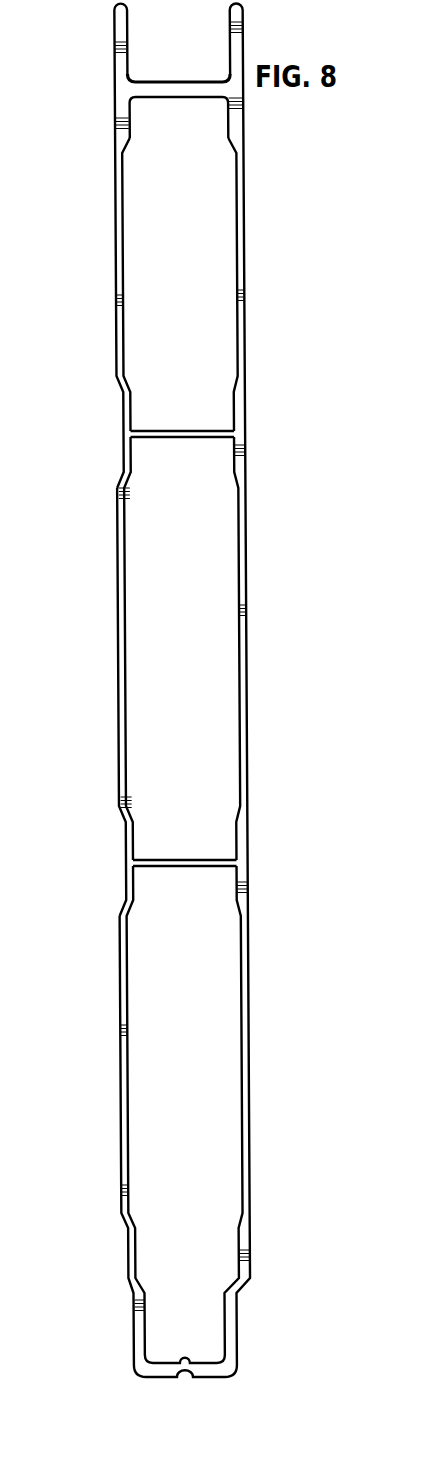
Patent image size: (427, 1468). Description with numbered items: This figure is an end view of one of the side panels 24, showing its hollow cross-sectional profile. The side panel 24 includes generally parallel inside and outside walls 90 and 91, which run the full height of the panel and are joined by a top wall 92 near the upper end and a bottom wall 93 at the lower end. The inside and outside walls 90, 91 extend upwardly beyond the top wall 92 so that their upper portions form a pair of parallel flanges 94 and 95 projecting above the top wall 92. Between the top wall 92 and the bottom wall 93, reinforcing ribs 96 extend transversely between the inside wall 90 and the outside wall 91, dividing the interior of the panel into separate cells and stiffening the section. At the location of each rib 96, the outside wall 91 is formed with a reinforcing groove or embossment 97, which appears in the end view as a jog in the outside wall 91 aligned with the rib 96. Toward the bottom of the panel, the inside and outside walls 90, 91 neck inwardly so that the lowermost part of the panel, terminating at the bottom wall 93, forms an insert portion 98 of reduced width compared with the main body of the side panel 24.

The side panel 24 is at (125, 736).
The inside wall 90 is at (234, 698).
The outside wall 91 is at (130, 704).
The top wall 92 is at (178, 106).
The bottom wall 93 is at (185, 1331).
The flange 94 is at (120, 50).
The flange 95 is at (236, 50).
The reinforcing rib 96 is at (184, 651).
The reinforcing groove or embossment 97 is at (183, 645).
The insert portion 98 is at (185, 1338).